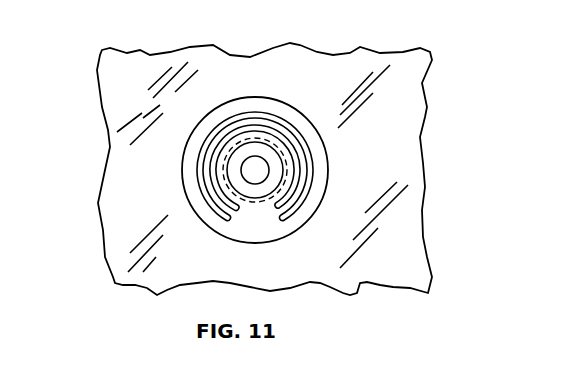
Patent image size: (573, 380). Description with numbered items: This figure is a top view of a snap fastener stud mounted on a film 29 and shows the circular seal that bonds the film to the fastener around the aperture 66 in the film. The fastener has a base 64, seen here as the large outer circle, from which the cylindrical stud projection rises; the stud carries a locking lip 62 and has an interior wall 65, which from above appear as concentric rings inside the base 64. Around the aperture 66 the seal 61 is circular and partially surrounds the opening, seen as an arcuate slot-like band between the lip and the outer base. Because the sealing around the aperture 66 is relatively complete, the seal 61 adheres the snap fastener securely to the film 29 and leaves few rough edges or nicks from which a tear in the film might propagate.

The substrate plate 29 is at (425, 115).
The seal 61 is at (318, 177).
The locking lip 62 is at (235, 133).
The base 64 is at (278, 102).
The interior wall 65 is at (243, 173).
The aperture 66 is at (205, 180).